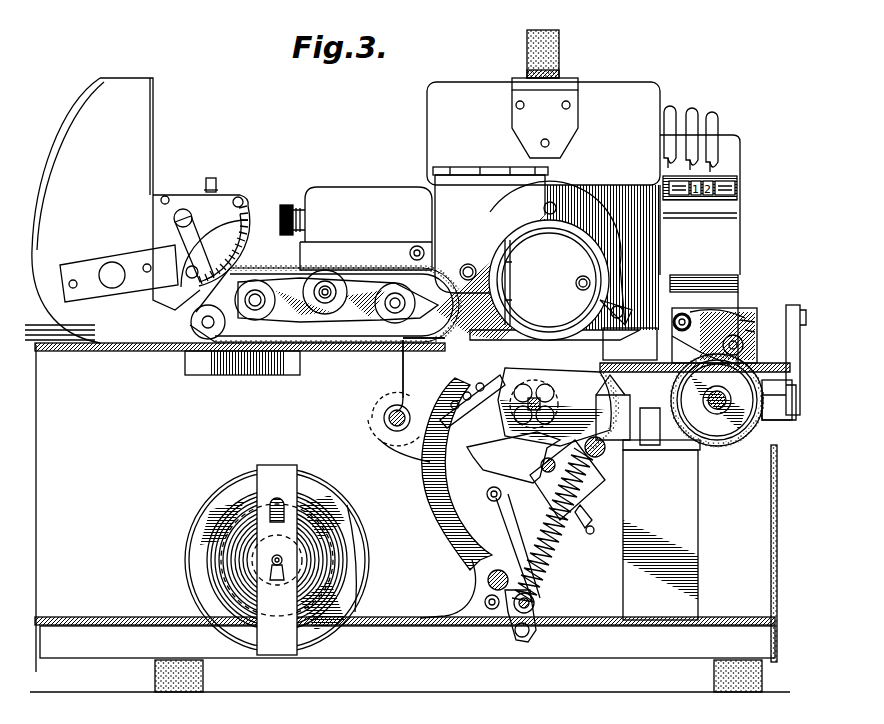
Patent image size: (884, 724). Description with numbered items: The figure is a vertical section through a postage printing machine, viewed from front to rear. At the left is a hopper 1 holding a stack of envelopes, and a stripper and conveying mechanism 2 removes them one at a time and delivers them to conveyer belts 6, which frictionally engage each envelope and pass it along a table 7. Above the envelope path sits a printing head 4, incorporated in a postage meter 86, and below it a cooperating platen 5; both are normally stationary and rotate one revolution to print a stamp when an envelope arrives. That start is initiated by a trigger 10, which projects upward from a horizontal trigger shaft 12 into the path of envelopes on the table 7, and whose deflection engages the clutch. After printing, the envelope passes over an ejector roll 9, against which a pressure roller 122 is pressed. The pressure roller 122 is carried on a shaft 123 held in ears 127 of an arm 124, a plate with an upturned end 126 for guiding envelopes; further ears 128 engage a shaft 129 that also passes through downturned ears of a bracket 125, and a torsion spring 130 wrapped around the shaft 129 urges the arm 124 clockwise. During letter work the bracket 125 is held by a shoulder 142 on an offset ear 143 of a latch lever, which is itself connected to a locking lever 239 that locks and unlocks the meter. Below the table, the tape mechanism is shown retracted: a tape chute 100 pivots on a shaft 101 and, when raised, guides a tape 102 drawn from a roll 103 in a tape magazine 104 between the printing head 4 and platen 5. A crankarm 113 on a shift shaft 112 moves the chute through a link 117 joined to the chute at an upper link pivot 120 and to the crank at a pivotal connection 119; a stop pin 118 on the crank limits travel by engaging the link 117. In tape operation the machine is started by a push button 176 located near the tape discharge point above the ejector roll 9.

The hopper 1 is at (75, 113).
The stripper and conveying mechanism 2 is at (268, 168).
The printing head 4 is at (490, 232).
The platen 5 is at (492, 428).
The conveyer belts 6 is at (280, 352).
The table 7 is at (335, 350).
The ejector roll 9 is at (712, 445).
The trigger 10 is at (403, 362).
The trigger shaft 12 is at (399, 410).
The postage meter 86 is at (672, 82).
The tape chute 100 is at (432, 496).
The shaft 101 is at (548, 452).
The tape 102 is at (455, 605).
The roll 103 is at (335, 545).
The tape magazine 104 is at (330, 465).
The shift shaft 112 is at (488, 580).
The crankarm 113 is at (505, 615).
The link 117 is at (505, 547).
The stop pin 118 is at (527, 636).
The pivotal connection 119 is at (536, 603).
The upper link pivot 120 is at (502, 495).
The pressure roller 122 is at (742, 314).
The shaft 123 is at (745, 335).
The arm 124 is at (718, 320).
The bracket 125 is at (722, 305).
The upturned end 126 is at (672, 290).
The ears 127 is at (728, 312).
The ears 128 is at (701, 350).
The shaft 129 is at (657, 339).
The torsion spring 130 is at (684, 313).
The shoulder 142 is at (772, 347).
The offset ear 143 is at (742, 343).
The push button 176 is at (774, 372).
The locking lever 239 is at (790, 305).